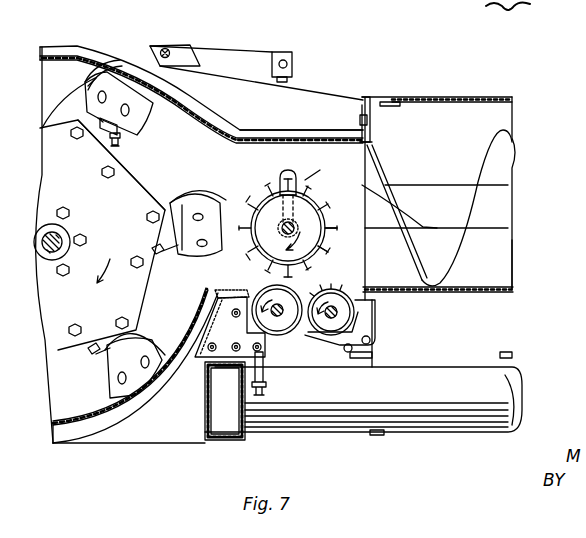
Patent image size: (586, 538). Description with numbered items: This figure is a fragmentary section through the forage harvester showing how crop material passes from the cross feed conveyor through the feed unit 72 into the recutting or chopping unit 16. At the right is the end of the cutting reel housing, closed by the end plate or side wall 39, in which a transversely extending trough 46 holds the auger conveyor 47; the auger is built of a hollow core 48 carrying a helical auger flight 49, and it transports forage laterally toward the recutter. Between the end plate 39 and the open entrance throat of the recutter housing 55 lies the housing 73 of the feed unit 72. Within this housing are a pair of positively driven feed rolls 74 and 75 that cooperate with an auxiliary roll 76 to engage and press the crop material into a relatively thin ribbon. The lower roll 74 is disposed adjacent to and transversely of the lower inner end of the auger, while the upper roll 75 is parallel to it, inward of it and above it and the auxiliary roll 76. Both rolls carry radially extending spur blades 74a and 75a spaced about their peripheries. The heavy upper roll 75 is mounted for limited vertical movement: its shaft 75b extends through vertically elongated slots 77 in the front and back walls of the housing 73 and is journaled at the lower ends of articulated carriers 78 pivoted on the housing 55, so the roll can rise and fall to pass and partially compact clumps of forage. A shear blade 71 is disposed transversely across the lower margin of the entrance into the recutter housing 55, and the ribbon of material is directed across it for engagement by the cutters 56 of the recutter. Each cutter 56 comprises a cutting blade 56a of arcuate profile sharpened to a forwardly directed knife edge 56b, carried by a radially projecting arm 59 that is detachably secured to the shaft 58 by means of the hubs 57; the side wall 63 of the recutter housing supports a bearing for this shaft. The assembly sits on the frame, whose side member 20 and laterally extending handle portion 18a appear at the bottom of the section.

The recutting or chopping unit 16 is at (102, 452).
The handle portion 18a is at (494, 372).
The side member 20 is at (208, 438).
The side wall 39 is at (363, 97).
The trough 46 is at (456, 294).
The auger conveyor 47 is at (515, 253).
The hollow core 48 is at (439, 192).
The helical auger flight 49 is at (510, 138).
The recutter housing 55 is at (75, 47).
The cutter 56 is at (152, 185).
The cutting blade 56a is at (128, 120).
The knife edge 56b is at (122, 72).
The hub 57 is at (38, 226).
The shaft 58 is at (60, 240).
The radially projecting arm 59 is at (48, 342).
The side wall 63 is at (318, 98).
The shear blade 71 is at (218, 292).
The feed unit 72 is at (310, 179).
The housing 73 is at (318, 136).
The feed roll 74 is at (352, 296).
The spur blade 74a is at (362, 329).
The feed roll 75 is at (320, 215).
The spur blade 75a is at (330, 252).
The shaft 75b is at (282, 222).
The auxiliary roll 76 is at (276, 336).
The vertically elongated slot 77 is at (286, 172).
The articulated carrier 78 is at (284, 50).